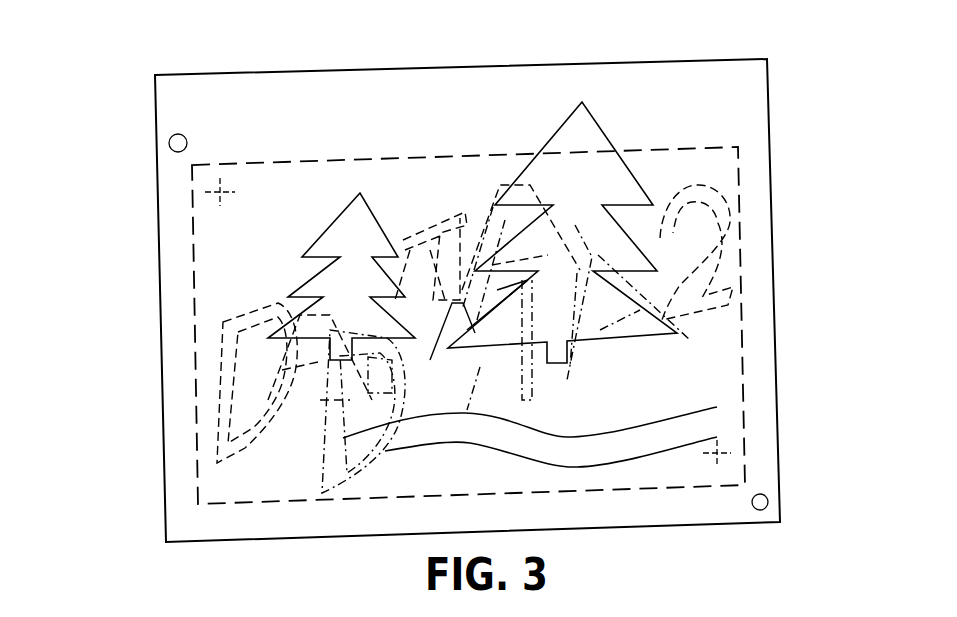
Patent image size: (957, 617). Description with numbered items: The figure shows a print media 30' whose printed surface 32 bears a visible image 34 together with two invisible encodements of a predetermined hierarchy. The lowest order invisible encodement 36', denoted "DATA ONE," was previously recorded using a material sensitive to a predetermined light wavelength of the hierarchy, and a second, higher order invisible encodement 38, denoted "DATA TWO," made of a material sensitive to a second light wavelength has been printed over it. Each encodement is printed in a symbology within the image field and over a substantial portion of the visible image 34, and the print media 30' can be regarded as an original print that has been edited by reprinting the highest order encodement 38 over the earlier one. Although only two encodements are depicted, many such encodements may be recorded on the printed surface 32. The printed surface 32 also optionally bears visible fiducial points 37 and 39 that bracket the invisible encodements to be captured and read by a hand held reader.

The print media 30' is at (429, 300).
The printed surface 32 is at (217, 203).
The visible image 34 is at (640, 168).
The invisible encodement 36' is at (375, 187).
The fiducial point 37 is at (168, 130).
The invisible encodement 38 is at (688, 330).
The fiducial point 39 is at (766, 492).